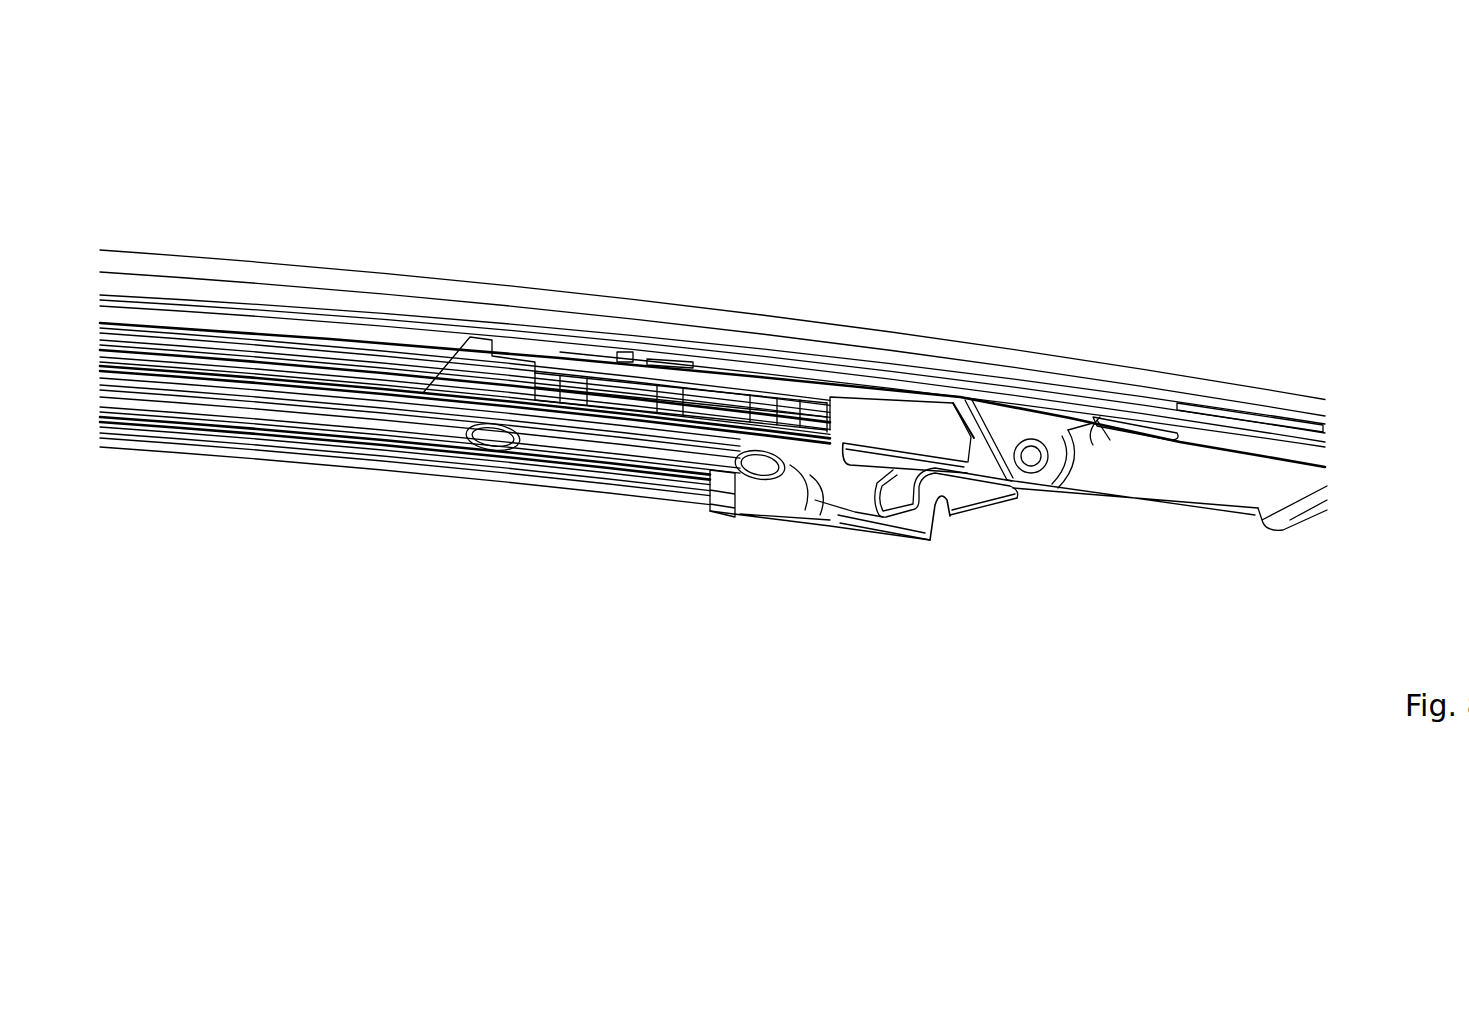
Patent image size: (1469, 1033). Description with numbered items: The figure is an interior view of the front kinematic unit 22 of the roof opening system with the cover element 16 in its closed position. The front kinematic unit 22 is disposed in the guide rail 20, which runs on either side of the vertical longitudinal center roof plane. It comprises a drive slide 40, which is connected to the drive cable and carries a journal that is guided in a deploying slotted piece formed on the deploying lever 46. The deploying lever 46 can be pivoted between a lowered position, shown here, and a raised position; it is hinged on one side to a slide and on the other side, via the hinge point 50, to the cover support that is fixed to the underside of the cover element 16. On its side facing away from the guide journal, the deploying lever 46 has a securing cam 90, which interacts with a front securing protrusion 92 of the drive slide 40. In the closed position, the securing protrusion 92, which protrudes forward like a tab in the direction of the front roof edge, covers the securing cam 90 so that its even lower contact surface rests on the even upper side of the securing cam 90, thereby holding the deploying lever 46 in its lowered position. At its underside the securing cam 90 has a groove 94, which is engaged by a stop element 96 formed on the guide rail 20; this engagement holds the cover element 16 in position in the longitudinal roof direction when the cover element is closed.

The cover element 16 is at (371, 275).
The guide rail 20 is at (578, 492).
The front kinematic unit 22 is at (976, 525).
The drive slide 40 is at (867, 423).
The deploying lever 46 is at (1030, 490).
The hinge point 50 is at (1030, 447).
The securing cam 90 is at (1010, 493).
The securing protrusion 92 is at (943, 440).
The groove 94 is at (952, 512).
The stop element 96 is at (932, 508).